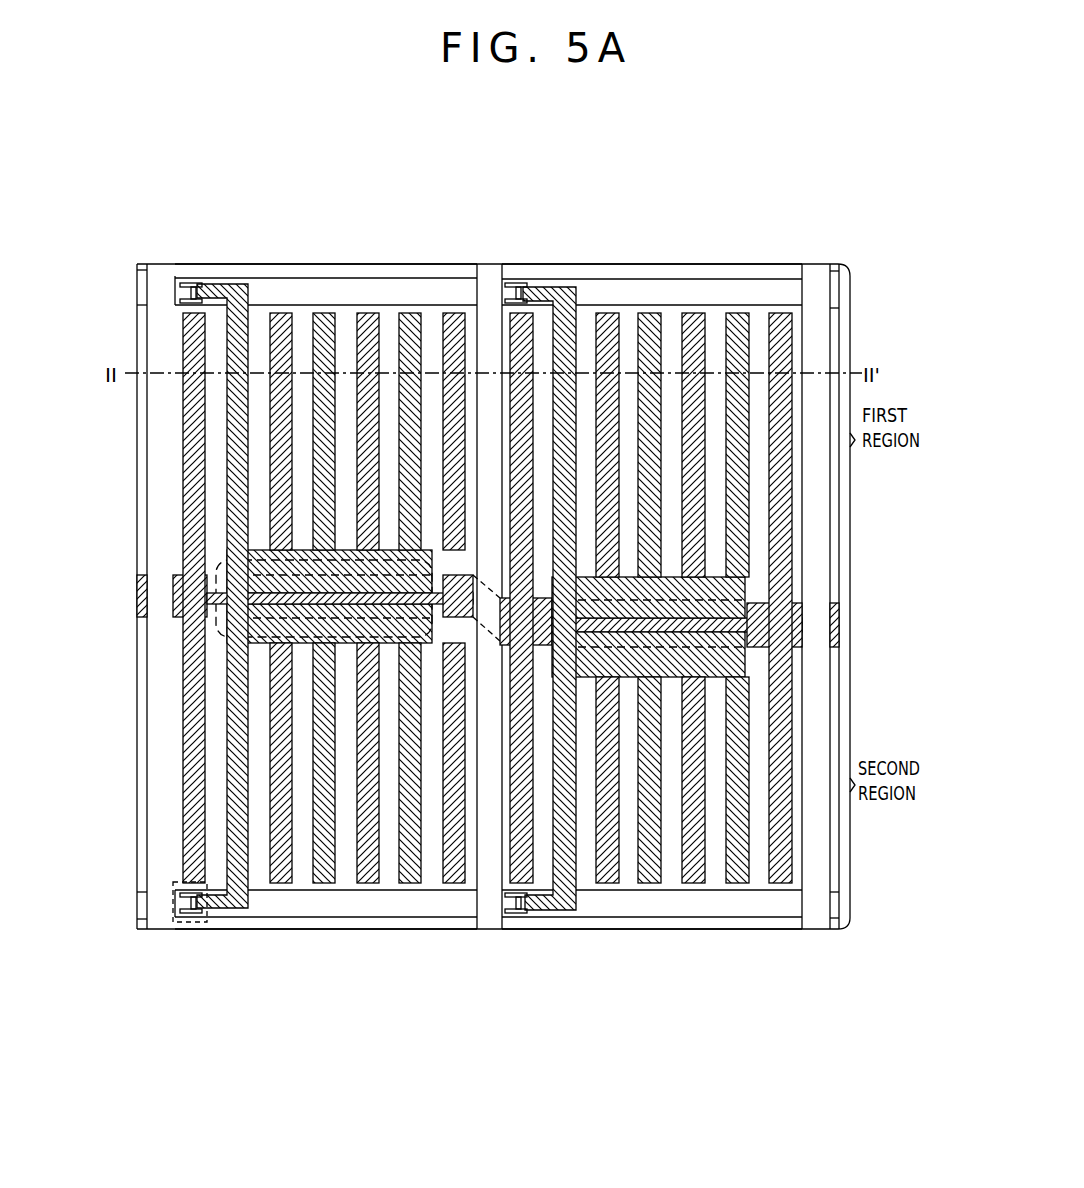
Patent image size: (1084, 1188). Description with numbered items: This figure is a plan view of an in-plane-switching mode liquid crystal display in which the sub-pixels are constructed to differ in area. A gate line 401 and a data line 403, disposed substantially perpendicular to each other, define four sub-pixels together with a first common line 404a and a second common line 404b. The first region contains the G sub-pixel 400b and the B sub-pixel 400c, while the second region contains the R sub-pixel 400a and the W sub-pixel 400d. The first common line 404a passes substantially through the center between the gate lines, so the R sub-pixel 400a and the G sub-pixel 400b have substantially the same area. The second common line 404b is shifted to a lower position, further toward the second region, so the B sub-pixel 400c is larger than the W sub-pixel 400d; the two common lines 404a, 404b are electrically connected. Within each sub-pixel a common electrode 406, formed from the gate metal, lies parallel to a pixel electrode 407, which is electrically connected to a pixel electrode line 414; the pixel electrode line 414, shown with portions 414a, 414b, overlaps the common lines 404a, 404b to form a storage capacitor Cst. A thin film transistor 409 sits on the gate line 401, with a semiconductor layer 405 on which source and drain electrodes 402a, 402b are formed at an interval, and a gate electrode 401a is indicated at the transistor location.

The R sub-pixel 400a is at (335, 935).
The G sub-pixel 400b is at (374, 258).
The B sub-pixel 400c is at (642, 258).
The W sub-pixel 400d is at (650, 935).
The gate line 401 is at (282, 910).
The gate electrode 401a is at (188, 883).
The source electrode 402a is at (176, 897).
The drain electrode 402b is at (205, 905).
The data line 403 is at (147, 786).
The first common line 404a is at (183, 598).
The second common line 404b is at (757, 640).
The semiconductor layer 405 is at (190, 923).
The common electrode 406 is at (282, 320).
The pixel electrode 407 is at (326, 320).
The thin film transistor 409 is at (160, 918).
The pixel electrode line 414 is at (754, 626).
The first common electrode connection 414a is at (737, 590).
The second common electrode connection 414b is at (737, 635).
The storage capacitor Cst is at (216, 568).